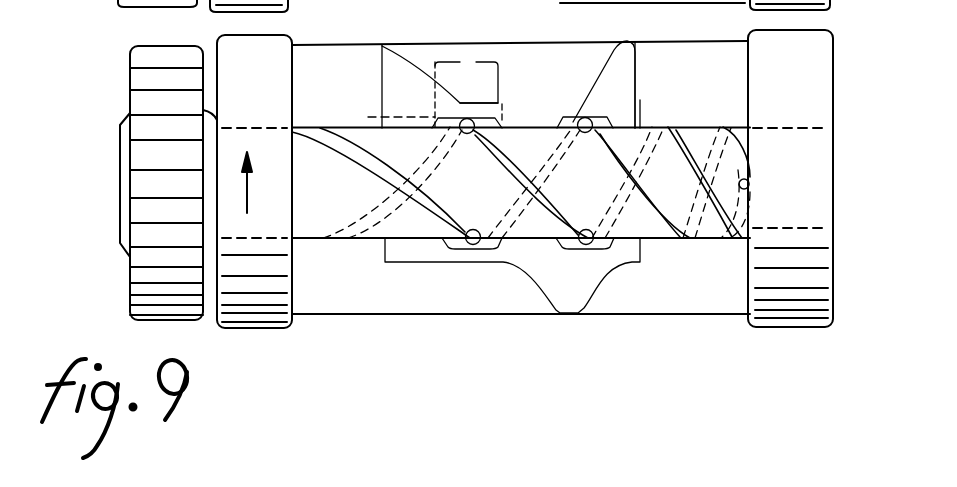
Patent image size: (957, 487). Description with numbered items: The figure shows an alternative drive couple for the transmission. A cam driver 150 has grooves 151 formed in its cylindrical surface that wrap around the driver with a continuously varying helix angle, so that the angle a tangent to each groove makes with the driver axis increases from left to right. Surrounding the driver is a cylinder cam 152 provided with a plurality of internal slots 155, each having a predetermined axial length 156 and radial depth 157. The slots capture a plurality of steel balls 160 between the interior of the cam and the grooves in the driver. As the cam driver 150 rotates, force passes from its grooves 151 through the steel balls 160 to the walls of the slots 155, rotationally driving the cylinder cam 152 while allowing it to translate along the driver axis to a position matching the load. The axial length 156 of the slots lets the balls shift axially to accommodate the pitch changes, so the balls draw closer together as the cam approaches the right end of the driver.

The cam driver 150 is at (372, 236).
The grooves 151 is at (387, 165).
The cylinder cam 152 is at (630, 68).
The internal slots 155 is at (578, 118).
The axial length 156 is at (476, 62).
The radial depth 157 is at (368, 117).
The steel balls 160 is at (452, 113).